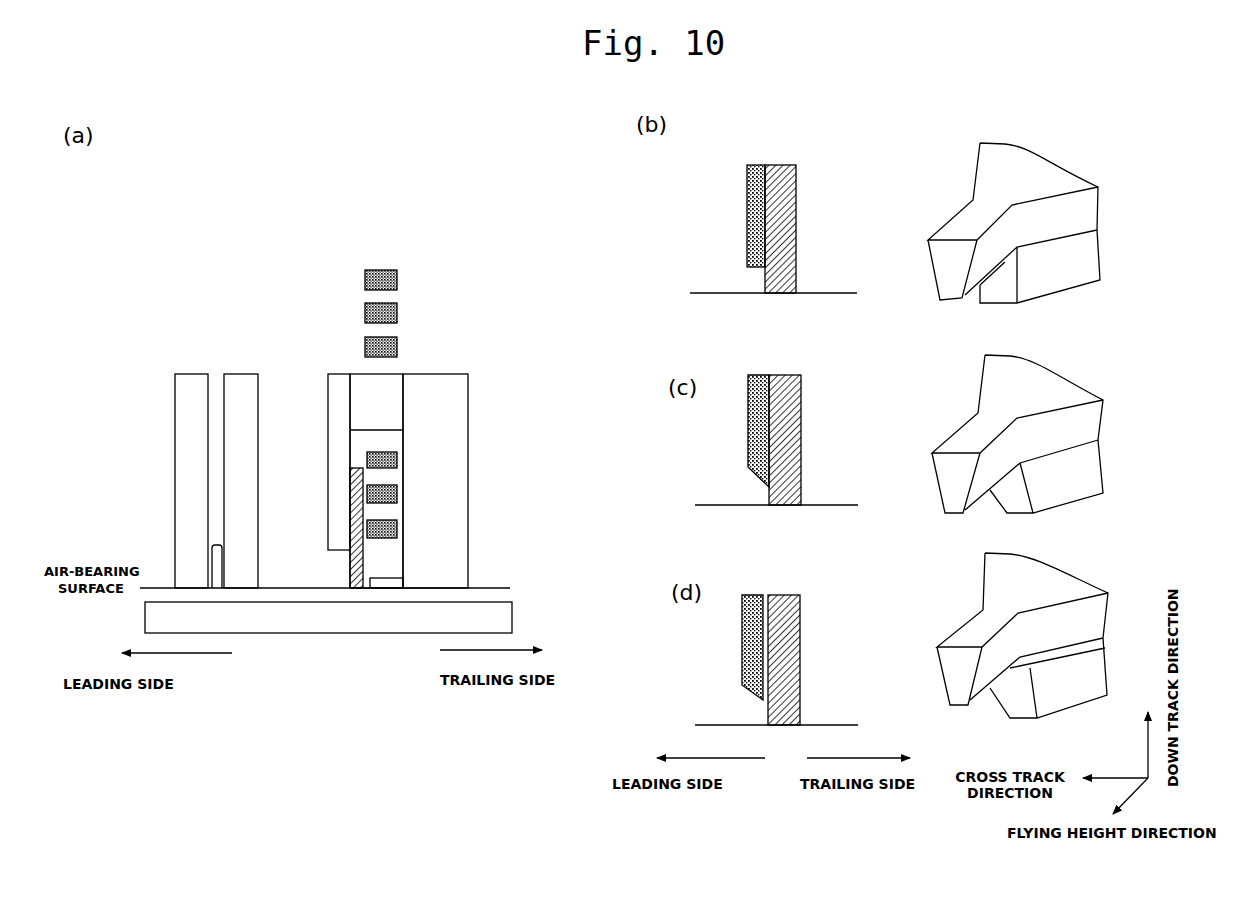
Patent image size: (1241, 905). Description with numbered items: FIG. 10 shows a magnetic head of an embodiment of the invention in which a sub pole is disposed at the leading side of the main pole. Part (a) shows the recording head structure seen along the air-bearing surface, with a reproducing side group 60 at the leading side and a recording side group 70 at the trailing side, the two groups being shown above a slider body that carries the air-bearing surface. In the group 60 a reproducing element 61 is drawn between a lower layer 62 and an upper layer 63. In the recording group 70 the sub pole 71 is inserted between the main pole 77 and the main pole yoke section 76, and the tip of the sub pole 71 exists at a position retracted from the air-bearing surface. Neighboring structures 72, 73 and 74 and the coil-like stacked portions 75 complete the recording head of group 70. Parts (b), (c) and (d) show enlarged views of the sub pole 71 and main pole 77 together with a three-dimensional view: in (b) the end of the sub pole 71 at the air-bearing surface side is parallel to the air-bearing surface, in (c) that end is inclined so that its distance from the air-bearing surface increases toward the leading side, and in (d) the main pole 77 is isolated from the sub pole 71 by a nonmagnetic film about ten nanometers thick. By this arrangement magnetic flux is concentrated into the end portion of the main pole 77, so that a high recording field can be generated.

The reproducing head portion 60 is at (268, 253).
The reproducing element 61 is at (212, 556).
The lower shield layer 62 is at (175, 405).
The upper shield layer 63 is at (233, 385).
The recording head portion 70 is at (472, 253).
The sub pole 71 is at (348, 562).
The return yoke 72 is at (450, 387).
The trailing shield 73 is at (379, 591).
The auxiliary yoke 74 is at (360, 385).
The coil 75 is at (405, 258).
The main pole yoke section 76 is at (328, 438).
The main pole 77 is at (352, 583).